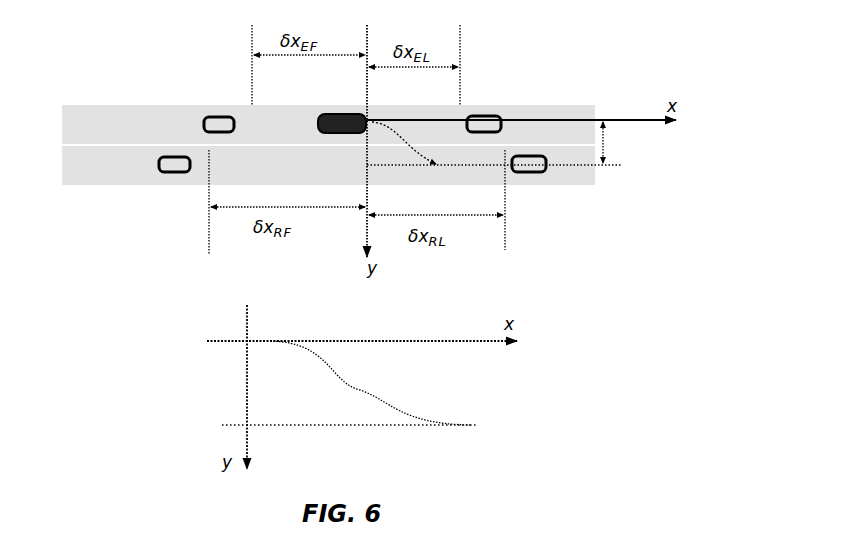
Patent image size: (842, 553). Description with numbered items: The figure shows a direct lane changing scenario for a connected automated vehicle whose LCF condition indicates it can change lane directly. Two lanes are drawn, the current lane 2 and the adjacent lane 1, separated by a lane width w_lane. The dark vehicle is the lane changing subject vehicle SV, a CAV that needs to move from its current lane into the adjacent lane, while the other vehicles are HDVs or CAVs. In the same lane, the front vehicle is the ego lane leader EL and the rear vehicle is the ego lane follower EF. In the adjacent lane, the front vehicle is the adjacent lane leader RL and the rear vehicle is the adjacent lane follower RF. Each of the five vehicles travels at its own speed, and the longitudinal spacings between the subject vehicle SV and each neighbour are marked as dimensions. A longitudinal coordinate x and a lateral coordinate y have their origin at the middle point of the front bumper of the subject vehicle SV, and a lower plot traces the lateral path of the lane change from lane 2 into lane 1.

The lane1 1 is at (328, 165).
The lane2 2 is at (328, 124).
The ego lane follower EF is at (218, 108).
The subject vehicle SV is at (330, 108).
The ego lane leader EL is at (484, 109).
The adjacent lane rear vehicle RF is at (175, 180).
The adjacent lane front vehicle RL is at (529, 182).
The lane width w_ lane is at (623, 142).